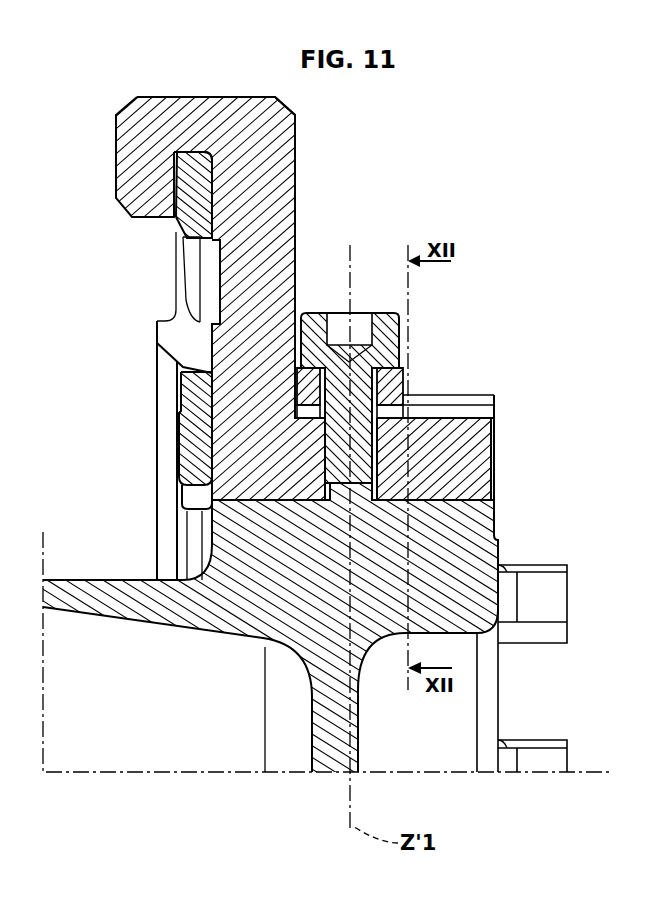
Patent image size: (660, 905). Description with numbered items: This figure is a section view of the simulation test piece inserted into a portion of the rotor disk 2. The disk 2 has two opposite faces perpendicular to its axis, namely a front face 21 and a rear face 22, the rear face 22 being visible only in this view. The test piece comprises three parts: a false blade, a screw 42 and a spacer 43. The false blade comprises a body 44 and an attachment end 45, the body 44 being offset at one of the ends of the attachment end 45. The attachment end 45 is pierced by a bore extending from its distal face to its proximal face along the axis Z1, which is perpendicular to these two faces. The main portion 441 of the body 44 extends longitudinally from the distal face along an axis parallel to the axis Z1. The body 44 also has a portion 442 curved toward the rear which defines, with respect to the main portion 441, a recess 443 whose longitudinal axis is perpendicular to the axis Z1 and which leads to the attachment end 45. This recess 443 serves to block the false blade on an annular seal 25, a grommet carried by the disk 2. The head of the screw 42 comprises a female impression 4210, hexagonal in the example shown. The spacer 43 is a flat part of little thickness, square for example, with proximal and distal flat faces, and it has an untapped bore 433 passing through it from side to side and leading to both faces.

The disk 2 is at (316, 591).
The front face 21 is at (498, 535).
The rear face 22 is at (212, 535).
The annular seal 25 is at (186, 213).
The screw 42 is at (315, 330).
The female impression 4210 is at (360, 323).
The spacer 43 is at (395, 387).
The untapped bore 433 is at (378, 411).
The body 44 is at (300, 237).
The main portion 441 is at (268, 185).
The curved portion 442 is at (137, 162).
The recess 443 is at (177, 155).
The attachment end 45 is at (470, 453).
The axis Z1-Z'1 Z1 is at (352, 263).